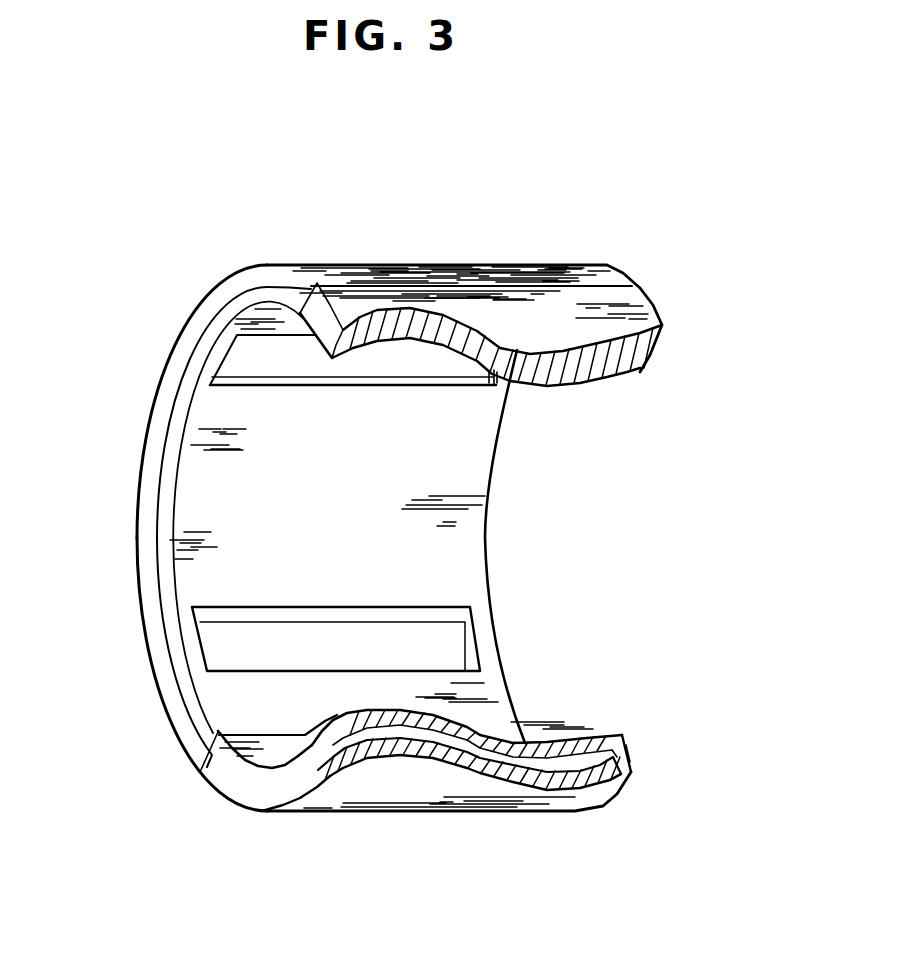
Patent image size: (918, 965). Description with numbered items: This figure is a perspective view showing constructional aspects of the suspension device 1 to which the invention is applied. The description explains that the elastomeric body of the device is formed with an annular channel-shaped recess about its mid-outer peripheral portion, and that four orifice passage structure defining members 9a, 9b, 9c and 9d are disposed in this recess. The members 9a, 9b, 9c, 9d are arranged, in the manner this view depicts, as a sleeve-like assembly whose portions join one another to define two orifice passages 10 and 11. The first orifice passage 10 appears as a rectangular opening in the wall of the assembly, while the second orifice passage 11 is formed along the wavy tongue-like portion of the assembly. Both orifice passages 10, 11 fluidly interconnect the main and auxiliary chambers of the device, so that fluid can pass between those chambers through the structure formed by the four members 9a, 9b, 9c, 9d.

The clip sleeve 1 is at (591, 198).
The orifice passage structure defining member 9a is at (207, 300).
The orifice passage structure defining member 9b is at (182, 383).
The orifice passage structure defining member 9c is at (242, 797).
The orifice passage structure defining member 9d is at (229, 768).
The orifice passage 10 is at (205, 641).
The orifice passage 11 is at (560, 783).